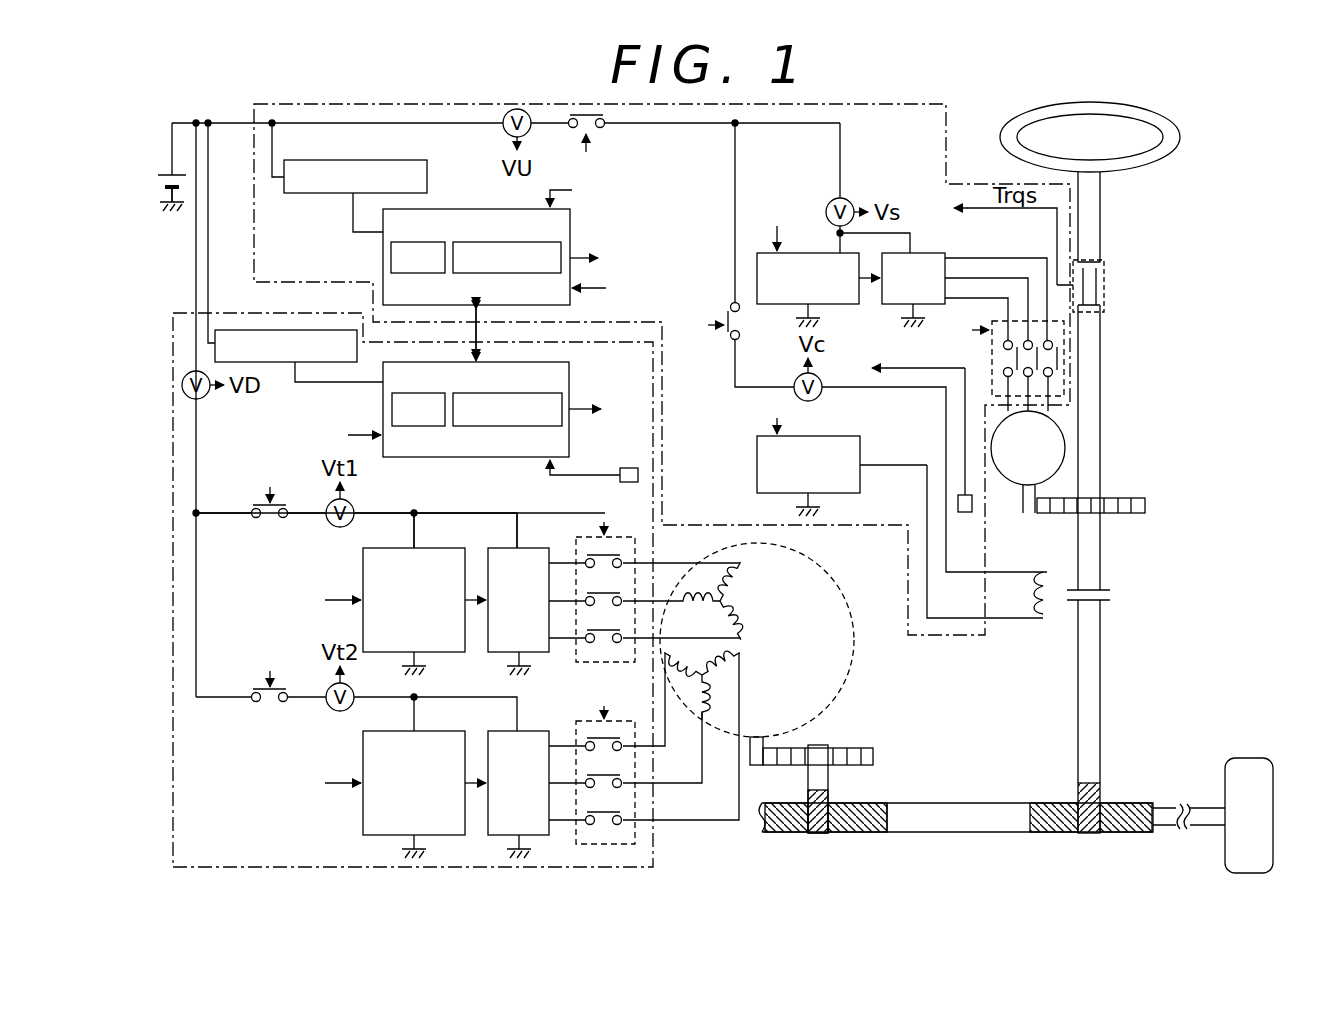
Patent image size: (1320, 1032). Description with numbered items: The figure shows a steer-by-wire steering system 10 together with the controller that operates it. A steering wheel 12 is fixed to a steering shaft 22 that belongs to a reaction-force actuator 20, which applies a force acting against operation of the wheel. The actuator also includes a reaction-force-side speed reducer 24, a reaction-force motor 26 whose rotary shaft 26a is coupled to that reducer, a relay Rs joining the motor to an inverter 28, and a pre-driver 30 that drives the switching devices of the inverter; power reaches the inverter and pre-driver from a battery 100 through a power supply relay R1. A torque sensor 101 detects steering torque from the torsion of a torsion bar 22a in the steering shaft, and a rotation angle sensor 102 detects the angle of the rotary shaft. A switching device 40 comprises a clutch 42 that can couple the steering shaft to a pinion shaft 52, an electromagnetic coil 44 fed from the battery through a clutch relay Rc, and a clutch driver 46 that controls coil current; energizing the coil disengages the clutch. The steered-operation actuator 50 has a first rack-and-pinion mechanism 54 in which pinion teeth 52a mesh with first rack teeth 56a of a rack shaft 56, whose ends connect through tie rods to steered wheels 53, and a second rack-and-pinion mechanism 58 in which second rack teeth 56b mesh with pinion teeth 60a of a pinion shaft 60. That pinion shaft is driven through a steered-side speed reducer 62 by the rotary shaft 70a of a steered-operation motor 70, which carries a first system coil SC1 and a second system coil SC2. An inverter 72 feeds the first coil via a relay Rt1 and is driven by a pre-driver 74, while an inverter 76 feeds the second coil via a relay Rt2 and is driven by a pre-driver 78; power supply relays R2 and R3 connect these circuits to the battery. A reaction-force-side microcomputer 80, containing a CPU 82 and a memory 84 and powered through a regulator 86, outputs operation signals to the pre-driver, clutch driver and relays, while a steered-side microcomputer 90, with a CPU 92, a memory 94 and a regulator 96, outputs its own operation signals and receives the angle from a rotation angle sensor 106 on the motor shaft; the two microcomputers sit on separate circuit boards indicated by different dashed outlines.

The steering system 10 is at (1230, 172).
The steering wheel 12 is at (1180, 137).
The reaction-force actuator 20 is at (1162, 400).
The steering shaft 22 is at (1100, 222).
The torsion bar 22a is at (1100, 290).
The reaction-force-side speed reducer 24 is at (1146, 500).
The reaction-force motor 26 is at (1065, 448).
The rotary shaft 26a is at (1028, 513).
The inverter 28 is at (928, 252).
The pre-driver 30 is at (770, 322).
The switching device 40 is at (1162, 555).
The clutch 42 is at (1112, 590).
The electromagnetic coil 44 is at (1043, 616).
The clutch driver 46 is at (847, 436).
The steered-operation actuator 50 is at (1162, 666).
The pinion shaft 52 is at (1100, 700).
The pinion teeth 52a is at (1100, 790).
The steered wheels 53 is at (1250, 758).
The first rack-and-pinion mechanism 54 is at (1110, 840).
The rack shaft 56 is at (956, 839).
The first rack teeth 56a is at (1058, 835).
The second rack teeth 56b is at (930, 835).
The second rack-and-pinion mechanism 58 is at (840, 842).
The pinion shaft 60 is at (868, 789).
The pinion teeth 60a is at (828, 805).
The steered-side speed reducer 62 is at (862, 748).
The steered-operation motor 70 is at (774, 640).
The rotary shaft 70a is at (757, 765).
The inverter 72 is at (530, 547).
The pre-driver 74 is at (442, 547).
The inverter 76 is at (530, 730).
The pre-driver 78 is at (442, 730).
The reaction-force-side microcomputer 80 is at (553, 242).
The central processing unit 82 is at (412, 241).
The memory 84 is at (488, 241).
The regulator 86 is at (427, 177).
The steered-side microcomputer 90 is at (429, 409).
The central processing unit 92 is at (412, 392).
The memory 94 is at (488, 392).
The regulator 96 is at (278, 363).
The battery 100 is at (167, 175).
The torque sensor 101 is at (1106, 272).
The rotation angle sensor 102 is at (965, 512).
The rotation angle sensor 106 is at (629, 468).
The power supply relay R1 is at (598, 132).
The power supply relay R2 is at (250, 503).
The power supply relay R3 is at (250, 689).
The clutch relay Rc is at (726, 341).
The relay Rs is at (1064, 358).
The relay Rt1 is at (583, 533).
The relay Rt2 is at (583, 717).
The first system coil SC1 is at (745, 570).
The second system coil SC2 is at (742, 676).